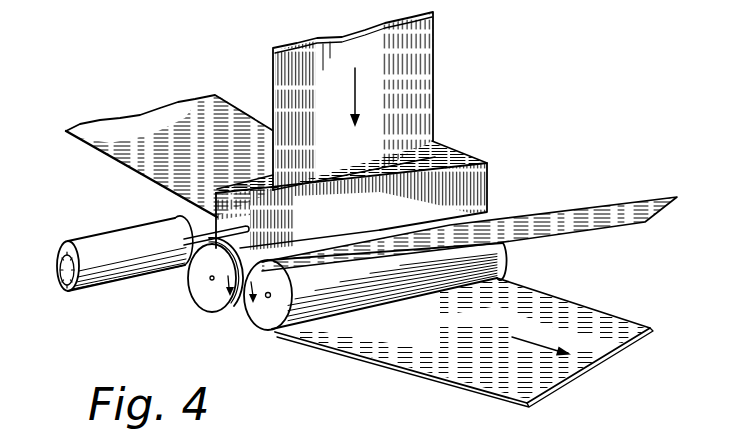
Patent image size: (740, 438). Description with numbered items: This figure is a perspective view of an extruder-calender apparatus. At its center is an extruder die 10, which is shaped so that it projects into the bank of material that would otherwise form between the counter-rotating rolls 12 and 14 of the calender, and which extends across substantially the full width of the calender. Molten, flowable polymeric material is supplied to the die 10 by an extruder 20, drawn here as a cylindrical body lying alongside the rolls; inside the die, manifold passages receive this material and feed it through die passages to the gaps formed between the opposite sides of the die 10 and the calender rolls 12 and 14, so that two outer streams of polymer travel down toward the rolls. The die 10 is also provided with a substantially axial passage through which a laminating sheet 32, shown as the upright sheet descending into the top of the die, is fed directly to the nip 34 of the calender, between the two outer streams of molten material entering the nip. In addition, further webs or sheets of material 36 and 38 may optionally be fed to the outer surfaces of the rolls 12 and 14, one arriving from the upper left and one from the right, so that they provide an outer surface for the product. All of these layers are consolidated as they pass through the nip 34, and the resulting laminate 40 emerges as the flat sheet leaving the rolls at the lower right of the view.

The extruder die 10 is at (498, 176).
The calender roll 12 is at (207, 288).
The calender roll 14 is at (266, 321).
The extruder 20 is at (88, 284).
The laminating sheet 32 is at (400, 44).
The nip 34 is at (232, 299).
The web or sheet of material 36 is at (175, 125).
The web or sheet of material 38 is at (621, 212).
The laminate 40 is at (438, 358).